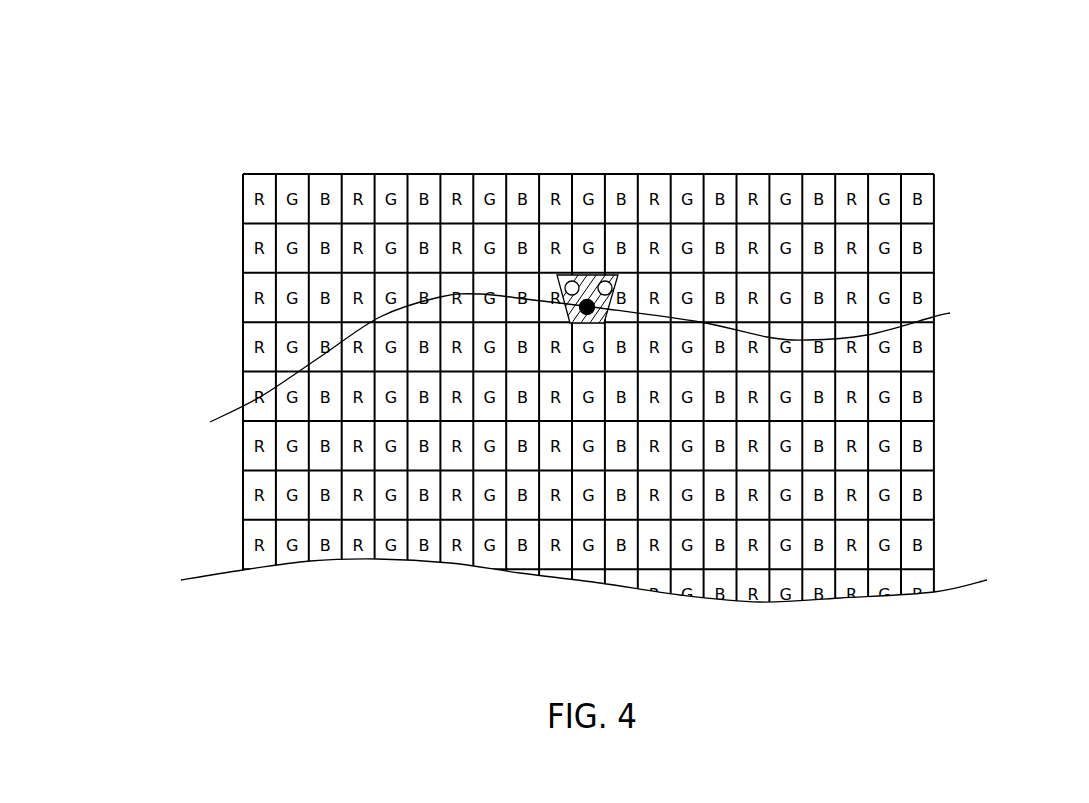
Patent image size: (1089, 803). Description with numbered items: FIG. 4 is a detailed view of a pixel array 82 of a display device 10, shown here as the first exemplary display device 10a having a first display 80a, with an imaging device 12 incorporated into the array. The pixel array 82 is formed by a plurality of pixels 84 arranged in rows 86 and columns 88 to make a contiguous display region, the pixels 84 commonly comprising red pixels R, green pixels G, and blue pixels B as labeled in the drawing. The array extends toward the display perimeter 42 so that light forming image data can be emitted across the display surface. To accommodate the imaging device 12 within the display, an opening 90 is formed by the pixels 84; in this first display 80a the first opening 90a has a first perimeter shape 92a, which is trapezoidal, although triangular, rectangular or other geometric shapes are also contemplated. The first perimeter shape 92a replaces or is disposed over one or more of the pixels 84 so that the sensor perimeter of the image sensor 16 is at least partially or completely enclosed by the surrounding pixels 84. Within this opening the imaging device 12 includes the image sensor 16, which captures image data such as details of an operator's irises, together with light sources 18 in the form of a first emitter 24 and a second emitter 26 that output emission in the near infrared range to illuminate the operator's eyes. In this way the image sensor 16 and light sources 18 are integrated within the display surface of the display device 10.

The display device 10 is at (568, 316).
The first exemplary display device 10a is at (299, 130).
The imaging device 12 is at (656, 276).
The image sensor 16 is at (560, 366).
The light sources 18 is at (613, 160).
The first emitter 24 is at (571, 281).
The second emitter 26 is at (605, 281).
The display perimeter 42 is at (560, 366).
The opening 90 is at (950, 313).
The first display 80a is at (934, 393).
The pixel array 82 is at (917, 140).
The pixels 84 is at (993, 259).
The rows 86 is at (238, 346).
The columns 88 is at (521, 170).
The first opening 90a is at (676, 163).
The first perimeter shape 92a is at (589, 299).